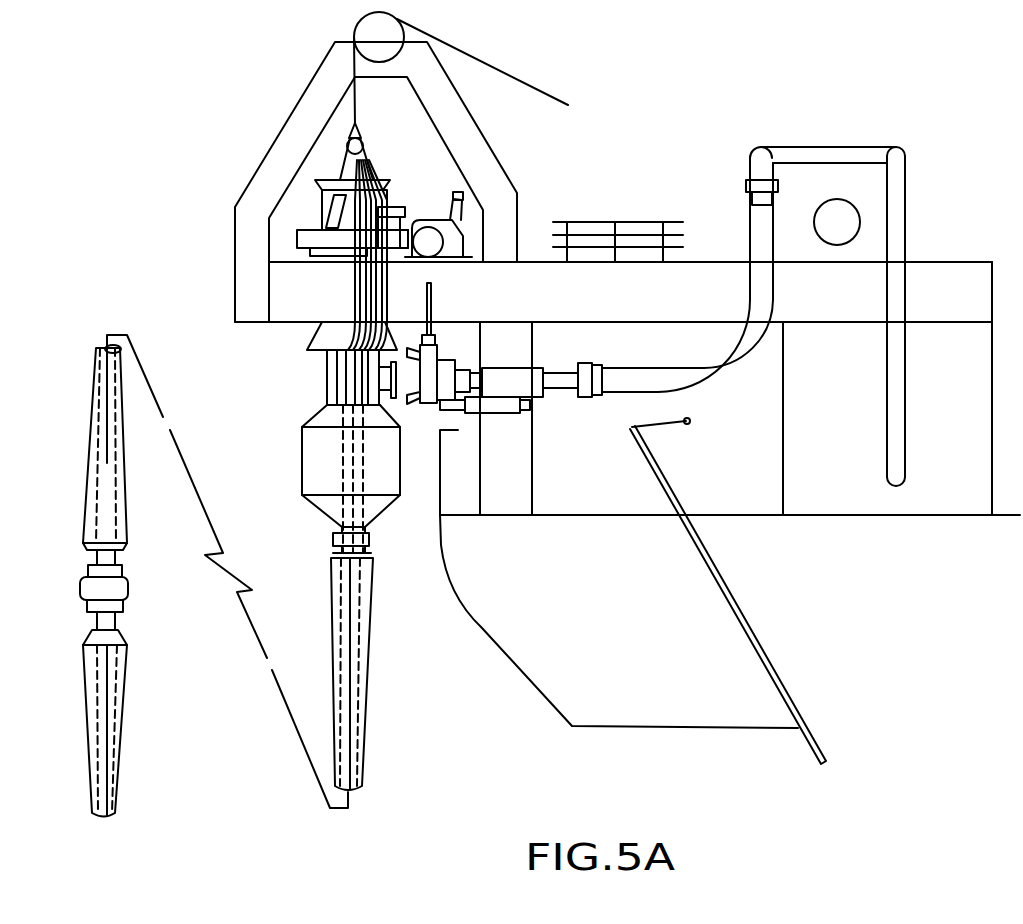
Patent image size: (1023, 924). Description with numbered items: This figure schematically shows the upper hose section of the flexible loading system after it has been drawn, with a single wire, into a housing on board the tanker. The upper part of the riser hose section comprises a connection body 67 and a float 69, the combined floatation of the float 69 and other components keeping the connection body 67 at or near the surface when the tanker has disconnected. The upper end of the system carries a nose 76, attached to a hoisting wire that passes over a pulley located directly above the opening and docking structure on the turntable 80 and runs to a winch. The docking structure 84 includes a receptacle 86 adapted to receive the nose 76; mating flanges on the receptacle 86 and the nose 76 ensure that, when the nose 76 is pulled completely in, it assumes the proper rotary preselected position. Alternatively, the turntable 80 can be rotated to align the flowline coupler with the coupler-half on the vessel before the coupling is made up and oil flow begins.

The docking structure 84 is at (208, 238).
The nose 76 is at (352, 137).
The connection body 67 is at (343, 167).
The receptacle 86 is at (315, 182).
The turntable 80 is at (420, 220).
The float 69 is at (307, 440).